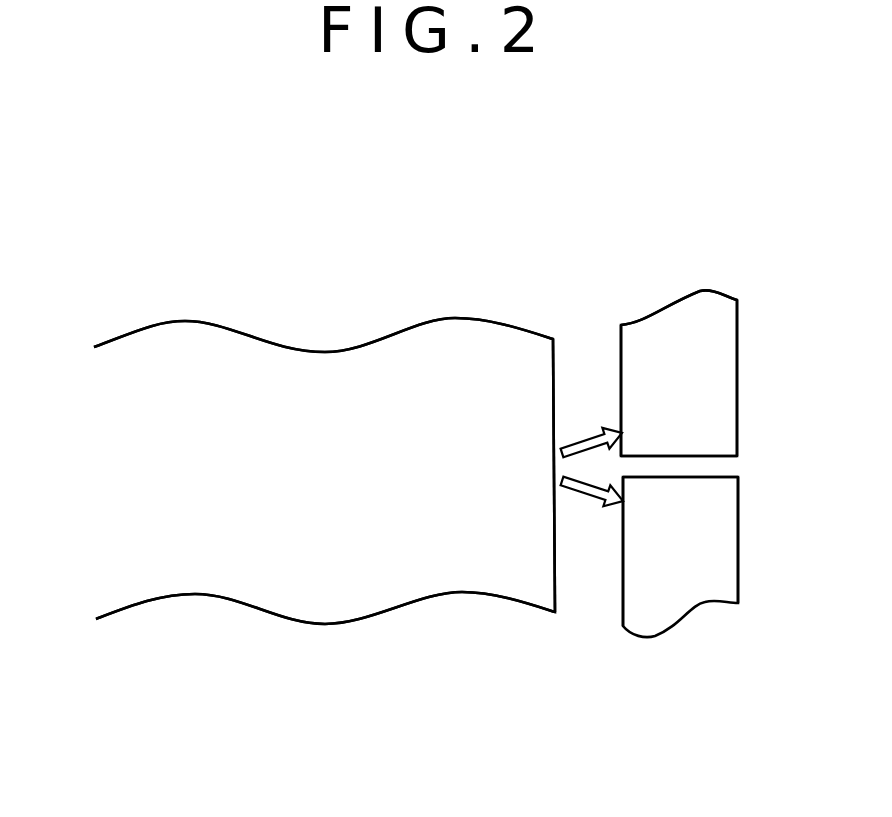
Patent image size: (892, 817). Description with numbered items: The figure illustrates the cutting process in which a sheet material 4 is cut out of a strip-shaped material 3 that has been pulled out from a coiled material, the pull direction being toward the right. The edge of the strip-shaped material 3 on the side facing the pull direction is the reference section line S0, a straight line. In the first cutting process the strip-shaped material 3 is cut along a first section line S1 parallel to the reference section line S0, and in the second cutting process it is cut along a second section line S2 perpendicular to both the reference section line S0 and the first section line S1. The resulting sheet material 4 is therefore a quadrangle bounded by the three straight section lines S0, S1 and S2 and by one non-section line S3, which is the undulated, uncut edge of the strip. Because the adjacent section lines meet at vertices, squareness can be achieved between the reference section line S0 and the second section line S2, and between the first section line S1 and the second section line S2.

The strip-shaped material 3 is at (233, 500).
The sheet material 4 is at (692, 398).
The reference section line S0 is at (555, 365).
The first section line S1 is at (620, 352).
The second section line S2 is at (737, 457).
The non-section line S3 is at (356, 347).